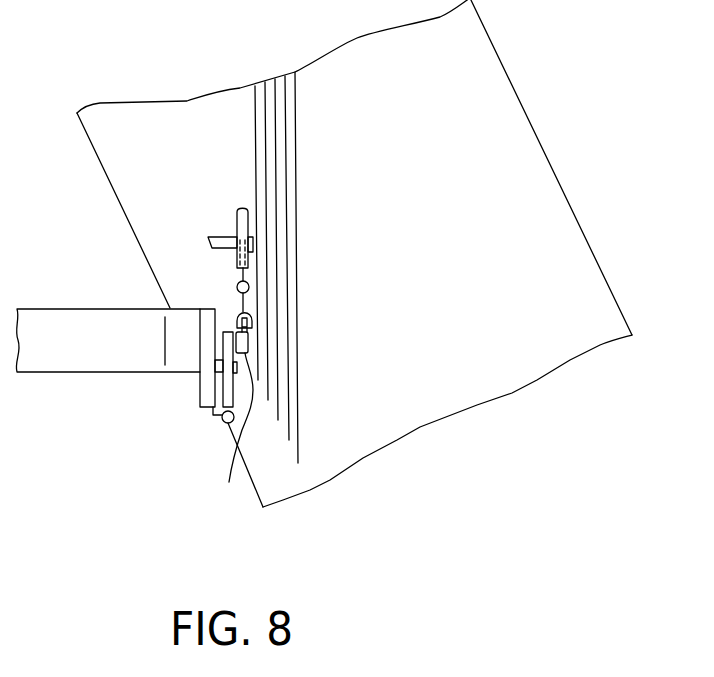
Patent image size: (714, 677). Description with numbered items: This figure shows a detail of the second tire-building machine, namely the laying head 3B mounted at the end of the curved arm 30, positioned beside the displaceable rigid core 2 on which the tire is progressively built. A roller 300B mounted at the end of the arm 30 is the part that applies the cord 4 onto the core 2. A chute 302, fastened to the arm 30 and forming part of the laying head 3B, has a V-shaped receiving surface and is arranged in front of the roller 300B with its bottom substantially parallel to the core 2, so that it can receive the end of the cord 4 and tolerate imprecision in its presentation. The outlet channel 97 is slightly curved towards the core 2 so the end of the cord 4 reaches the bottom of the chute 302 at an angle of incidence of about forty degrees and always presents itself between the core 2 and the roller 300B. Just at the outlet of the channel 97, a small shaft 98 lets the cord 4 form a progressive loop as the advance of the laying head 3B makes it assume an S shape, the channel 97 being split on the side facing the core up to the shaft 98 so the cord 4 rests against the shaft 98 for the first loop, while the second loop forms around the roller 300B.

The core 2 is at (476, 395).
The curved arm 30 is at (53, 362).
The laying head 3B is at (132, 394).
The cord 4 is at (240, 303).
The outlet channel 97 is at (236, 212).
The small shaft 98 is at (208, 238).
The chute 302 is at (239, 275).
The roller 300B is at (206, 433).